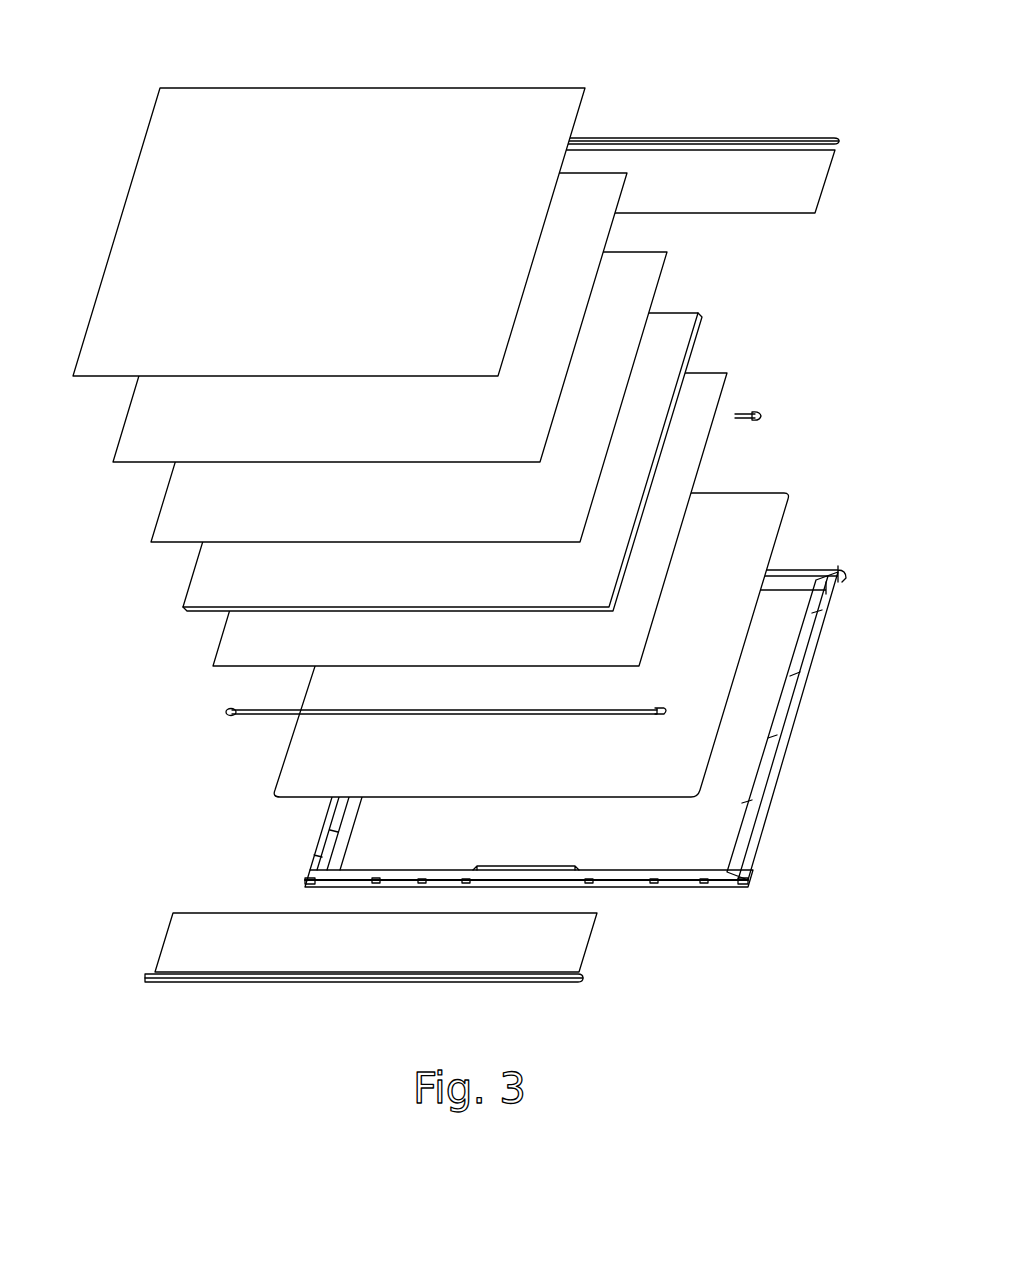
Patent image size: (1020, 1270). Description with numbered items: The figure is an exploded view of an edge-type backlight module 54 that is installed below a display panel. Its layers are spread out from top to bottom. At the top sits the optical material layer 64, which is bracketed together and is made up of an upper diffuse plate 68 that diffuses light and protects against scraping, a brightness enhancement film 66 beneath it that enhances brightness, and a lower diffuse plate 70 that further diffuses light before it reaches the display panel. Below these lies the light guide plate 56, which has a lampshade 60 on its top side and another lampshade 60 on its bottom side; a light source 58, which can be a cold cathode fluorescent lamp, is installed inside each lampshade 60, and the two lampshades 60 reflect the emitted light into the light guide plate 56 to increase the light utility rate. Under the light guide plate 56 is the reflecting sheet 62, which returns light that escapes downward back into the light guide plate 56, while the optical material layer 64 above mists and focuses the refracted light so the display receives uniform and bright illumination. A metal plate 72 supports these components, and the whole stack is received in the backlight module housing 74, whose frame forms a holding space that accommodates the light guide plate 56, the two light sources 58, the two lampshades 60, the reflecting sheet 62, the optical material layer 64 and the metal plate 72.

The edge-type backlight module 54 is at (835, 18).
The light guide plate 56 is at (667, 322).
The light sources 58 is at (268, 713).
The lampshades 60 is at (780, 194).
The reflecting sheet 62 is at (697, 382).
The optical material layer 64 is at (700, 26).
The brightness enhancement film 66 is at (610, 182).
The upper diffuse plate 68 is at (557, 108).
The lower diffuse plate 70 is at (635, 262).
The metal plate 72 is at (733, 500).
The backlight module housing 74 is at (834, 630).